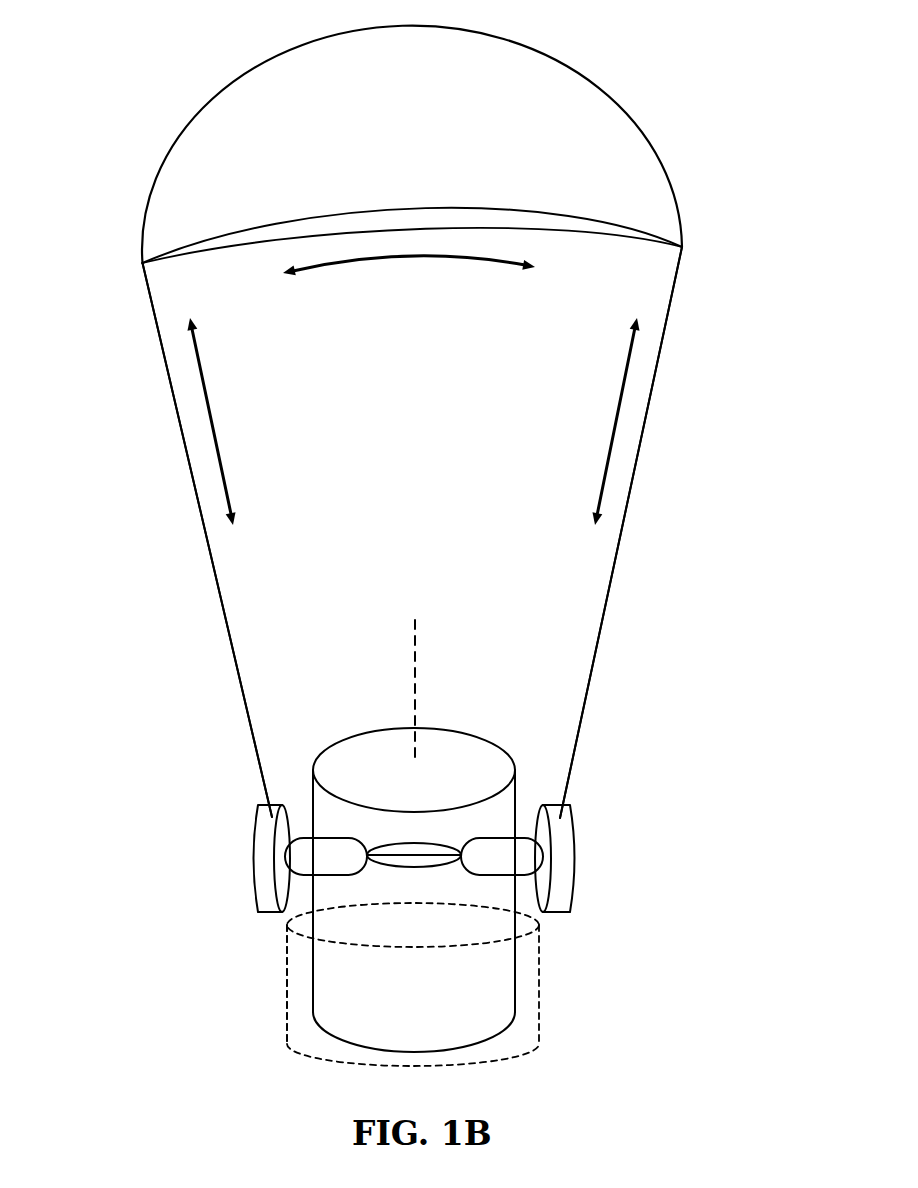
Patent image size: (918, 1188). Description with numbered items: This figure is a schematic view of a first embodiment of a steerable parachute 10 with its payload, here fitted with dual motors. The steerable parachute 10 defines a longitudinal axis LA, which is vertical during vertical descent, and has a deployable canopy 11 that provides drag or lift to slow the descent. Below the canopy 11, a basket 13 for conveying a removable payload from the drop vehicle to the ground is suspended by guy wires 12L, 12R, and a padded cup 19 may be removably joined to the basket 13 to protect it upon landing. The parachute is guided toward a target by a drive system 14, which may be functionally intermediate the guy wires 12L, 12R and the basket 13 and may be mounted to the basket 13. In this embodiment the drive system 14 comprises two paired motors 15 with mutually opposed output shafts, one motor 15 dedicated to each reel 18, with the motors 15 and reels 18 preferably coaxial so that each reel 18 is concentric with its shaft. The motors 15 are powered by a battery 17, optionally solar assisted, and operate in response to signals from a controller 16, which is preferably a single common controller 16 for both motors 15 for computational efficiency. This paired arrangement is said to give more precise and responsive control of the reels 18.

The steerable parachute 10 is at (140, 485).
The deployable canopy 11 is at (597, 123).
The left guy wire 12L is at (178, 418).
The right guy wire 12R is at (646, 416).
The basket 13 is at (228, 946).
The drive system 14 is at (641, 906).
The motor 15 is at (326, 848).
The controller 16 is at (392, 850).
The battery 17 is at (418, 860).
The reel 18 is at (262, 862).
The padded cup 19 is at (527, 967).
The longitudinal axis LA is at (413, 676).